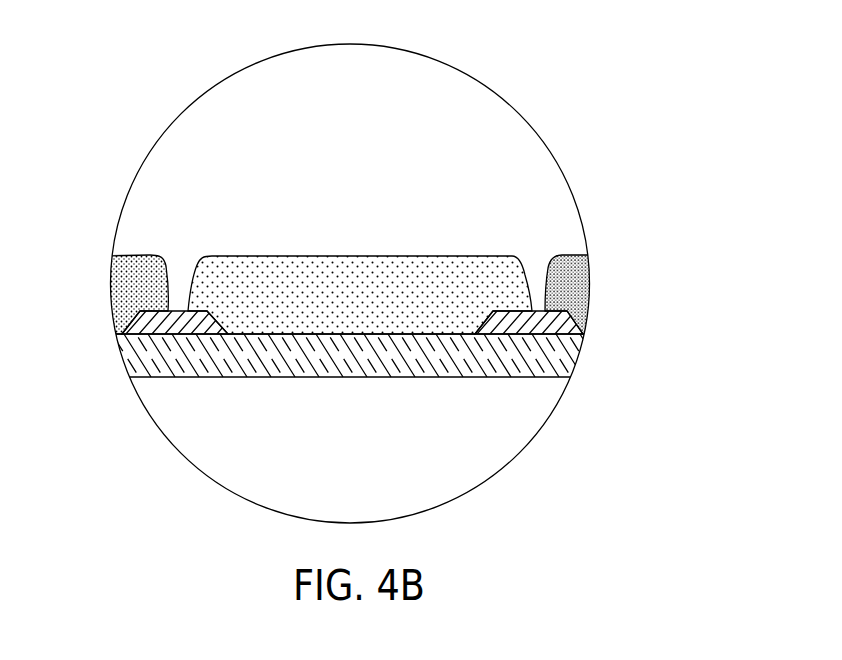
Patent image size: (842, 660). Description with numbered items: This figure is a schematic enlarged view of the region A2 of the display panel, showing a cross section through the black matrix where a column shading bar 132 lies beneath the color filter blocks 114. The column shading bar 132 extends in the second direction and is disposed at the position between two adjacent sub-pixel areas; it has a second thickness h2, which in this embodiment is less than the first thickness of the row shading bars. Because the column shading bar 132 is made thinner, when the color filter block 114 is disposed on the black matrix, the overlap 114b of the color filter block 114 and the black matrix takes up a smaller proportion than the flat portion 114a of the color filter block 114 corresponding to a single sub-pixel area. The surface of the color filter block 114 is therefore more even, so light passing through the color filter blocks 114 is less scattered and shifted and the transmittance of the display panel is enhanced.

The region A2 is at (445, 63).
The color filter block 114 is at (197, 273).
The flat portion 114a is at (488, 257).
The overlap 114b is at (528, 260).
The column shading bar 132 is at (587, 328).
The second thickness h2 is at (130, 335).